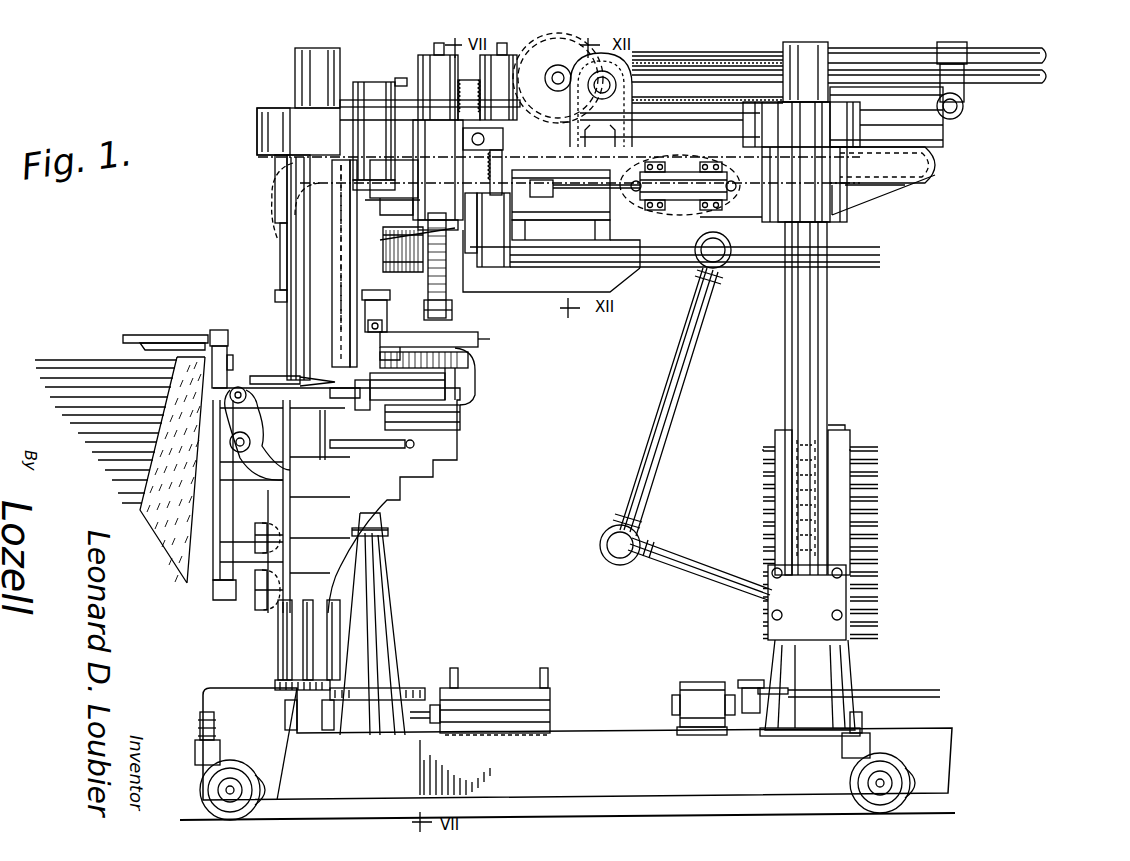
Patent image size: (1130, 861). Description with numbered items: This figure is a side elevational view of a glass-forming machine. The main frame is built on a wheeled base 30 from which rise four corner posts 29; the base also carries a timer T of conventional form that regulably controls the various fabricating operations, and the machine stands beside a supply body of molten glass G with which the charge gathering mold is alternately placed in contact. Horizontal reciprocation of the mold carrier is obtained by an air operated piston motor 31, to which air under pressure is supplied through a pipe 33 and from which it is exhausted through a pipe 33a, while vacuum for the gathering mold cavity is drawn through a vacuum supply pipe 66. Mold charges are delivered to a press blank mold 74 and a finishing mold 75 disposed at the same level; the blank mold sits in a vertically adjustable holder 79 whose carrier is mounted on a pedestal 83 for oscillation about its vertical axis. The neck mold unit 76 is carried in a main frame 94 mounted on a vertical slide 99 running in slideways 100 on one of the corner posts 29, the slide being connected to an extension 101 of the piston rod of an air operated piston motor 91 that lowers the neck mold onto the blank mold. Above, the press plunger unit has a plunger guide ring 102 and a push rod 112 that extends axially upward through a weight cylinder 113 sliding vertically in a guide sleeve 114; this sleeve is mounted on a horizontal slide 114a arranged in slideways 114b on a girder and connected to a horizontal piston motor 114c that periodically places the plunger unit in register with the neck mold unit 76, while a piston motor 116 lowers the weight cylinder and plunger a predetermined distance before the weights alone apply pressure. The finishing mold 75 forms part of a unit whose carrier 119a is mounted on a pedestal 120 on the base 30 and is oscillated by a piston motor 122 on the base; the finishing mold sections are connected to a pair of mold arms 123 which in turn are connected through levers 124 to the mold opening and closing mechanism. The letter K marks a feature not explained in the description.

The corner posts 29 is at (297, 92).
The wheeled base 30 is at (628, 714).
The air operated piston motor 31 is at (935, 125).
The pipe 33 is at (1022, 82).
The pipe 33a is at (1045, 52).
The vacuum supply pipe 66 is at (672, 372).
The press blank mold 74 is at (474, 380).
The finishing mold 75 is at (468, 362).
The neck mold unit 76 is at (490, 337).
The vertically adjustable holder 79 is at (462, 418).
The pedestal 83 is at (292, 640).
The air operated piston motor 91 is at (375, 90).
The main frame 94 is at (460, 340).
The vertical slide 99 is at (343, 272).
The slideways 100 is at (334, 342).
The extension 101 is at (370, 220).
The plunger guide ring 102 is at (450, 305).
The push rod 112 is at (434, 50).
The weight cylinder 113 is at (430, 70).
The guide sleeve 114 is at (458, 174).
The horizontal slide 114a is at (550, 202).
The slideways 114b is at (600, 222).
The horizontal piston motor 114c is at (688, 200).
The piston motor 116 is at (485, 262).
The carrier 119a is at (395, 490).
The pedestal 120 is at (350, 620).
The piston motor 122 is at (510, 680).
The mold arms 123 is at (387, 391).
The levers 124 is at (318, 382).
The supply body of molten glass G is at (84, 365).
The rail K is at (176, 336).
The timer T is at (850, 440).